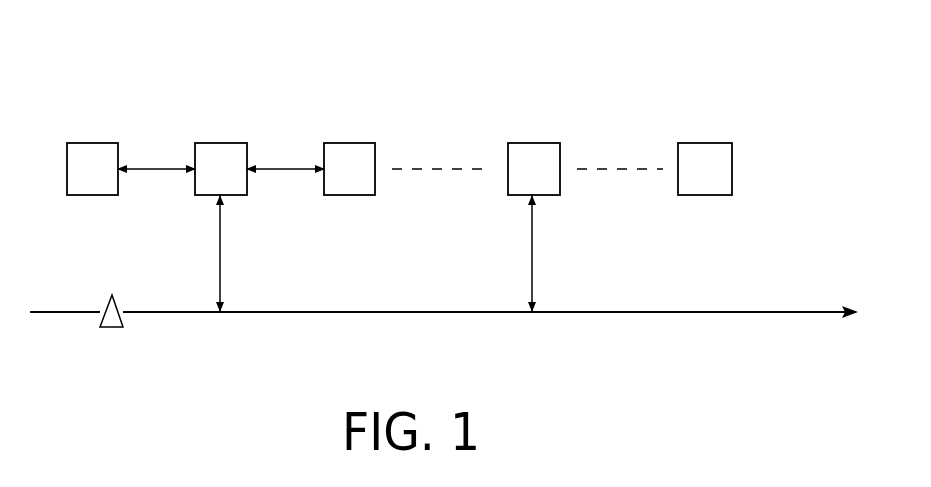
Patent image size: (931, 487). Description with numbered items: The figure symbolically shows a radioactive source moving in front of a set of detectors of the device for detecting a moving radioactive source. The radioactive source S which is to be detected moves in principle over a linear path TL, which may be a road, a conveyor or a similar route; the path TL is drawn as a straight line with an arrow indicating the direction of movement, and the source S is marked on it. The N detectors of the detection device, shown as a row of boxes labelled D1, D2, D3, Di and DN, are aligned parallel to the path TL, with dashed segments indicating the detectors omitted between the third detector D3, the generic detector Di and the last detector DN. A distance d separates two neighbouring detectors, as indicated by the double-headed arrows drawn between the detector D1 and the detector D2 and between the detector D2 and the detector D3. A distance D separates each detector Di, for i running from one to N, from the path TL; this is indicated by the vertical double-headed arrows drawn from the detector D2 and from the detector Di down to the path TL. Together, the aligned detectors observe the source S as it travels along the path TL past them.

The detector D1 is at (90, 157).
The detector D2 is at (210, 155).
The detector D3 is at (342, 157).
The detector Di is at (525, 157).
The detector DN is at (697, 157).
The radioactive source S is at (108, 328).
The linear path TL is at (318, 313).
The distance between neighbouring detectors d is at (221, 155).
The distance between detector and path D is at (388, 253).